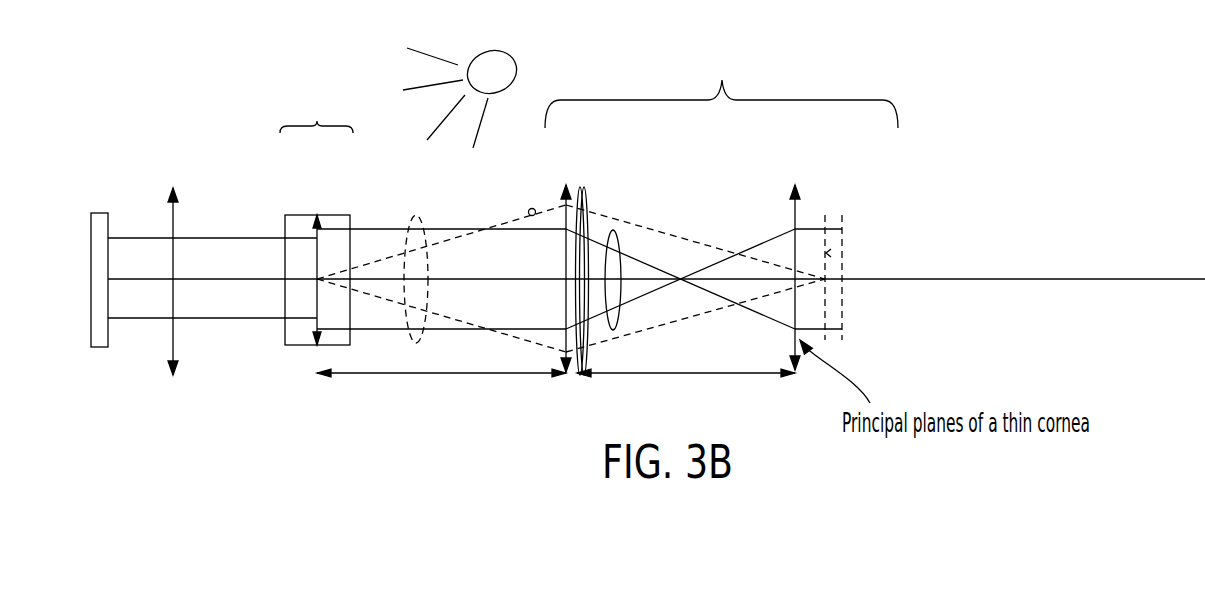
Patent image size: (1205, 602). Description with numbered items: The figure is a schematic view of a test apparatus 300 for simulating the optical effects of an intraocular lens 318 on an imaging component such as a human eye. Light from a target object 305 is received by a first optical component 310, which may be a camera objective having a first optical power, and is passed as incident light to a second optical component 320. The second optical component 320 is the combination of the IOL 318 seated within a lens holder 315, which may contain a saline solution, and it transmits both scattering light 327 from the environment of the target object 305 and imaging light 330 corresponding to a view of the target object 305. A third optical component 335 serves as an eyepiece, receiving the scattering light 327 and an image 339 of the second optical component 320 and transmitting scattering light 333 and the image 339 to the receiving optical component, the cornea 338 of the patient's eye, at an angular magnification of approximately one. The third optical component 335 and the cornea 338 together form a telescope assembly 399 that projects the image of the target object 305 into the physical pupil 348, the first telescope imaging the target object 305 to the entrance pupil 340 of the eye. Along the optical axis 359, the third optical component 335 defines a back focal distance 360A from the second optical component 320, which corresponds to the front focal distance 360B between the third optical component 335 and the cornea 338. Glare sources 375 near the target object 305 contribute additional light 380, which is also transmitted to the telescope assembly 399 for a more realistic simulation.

The apparatus 300 is at (880, 66).
The target object 305 is at (98, 213).
The first optical component 310 is at (174, 240).
The lens holder 315 is at (330, 215).
The intraocular lens 318 is at (317, 246).
The second optical component 320 is at (317, 133).
The scattering light 327 is at (421, 217).
The imaging light 330 is at (651, 330).
The scattering light 333 is at (620, 240).
The third optical component 335 is at (581, 203).
The cornea 338 is at (790, 222).
The image of the second optical component 339 is at (532, 209).
The entrance pupil 340 is at (845, 250).
The physical pupil 348 is at (843, 215).
The optical axis 359 is at (982, 279).
The back focal distance 360A is at (512, 375).
The front focal distance 360B is at (747, 375).
The glare sources 375 is at (517, 62).
The additional light 380 is at (418, 85).
The telescope assembly 399 is at (721, 84).